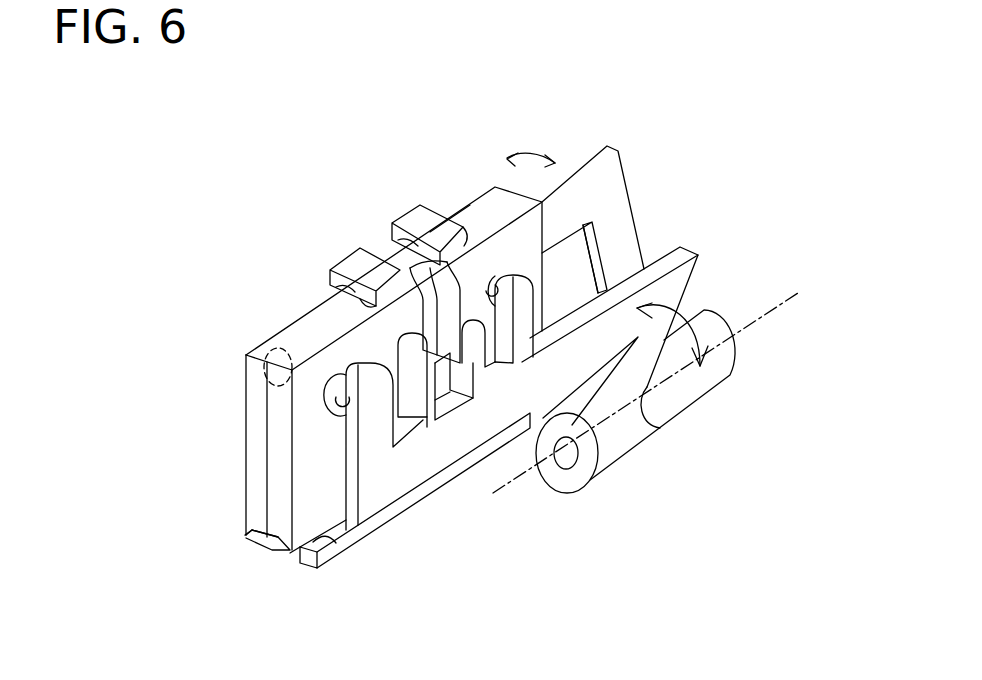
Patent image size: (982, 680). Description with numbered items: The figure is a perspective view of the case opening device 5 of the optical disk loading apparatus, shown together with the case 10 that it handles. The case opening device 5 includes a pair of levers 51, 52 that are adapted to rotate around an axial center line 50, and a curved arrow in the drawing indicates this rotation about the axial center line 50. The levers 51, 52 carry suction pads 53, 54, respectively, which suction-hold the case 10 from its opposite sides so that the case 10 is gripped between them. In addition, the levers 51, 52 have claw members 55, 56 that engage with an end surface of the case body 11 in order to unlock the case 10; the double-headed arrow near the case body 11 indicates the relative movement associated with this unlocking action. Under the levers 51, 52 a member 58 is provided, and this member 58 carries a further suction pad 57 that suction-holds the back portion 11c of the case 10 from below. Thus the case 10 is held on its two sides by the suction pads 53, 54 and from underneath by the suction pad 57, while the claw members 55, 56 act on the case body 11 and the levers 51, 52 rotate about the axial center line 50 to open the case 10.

The case opening device 5 is at (236, 212).
The case 10 is at (289, 310).
The case body 11 is at (505, 210).
The back portion 11c is at (250, 540).
The axial center line 50 is at (777, 310).
The lever 51 is at (690, 262).
The lever 52 is at (620, 162).
The suction pad 53 is at (328, 407).
The suction pad 54 is at (257, 380).
The claw member 55 is at (425, 267).
The claw member 56 is at (405, 213).
The suction pad 57 is at (307, 556).
The member 58 is at (308, 553).